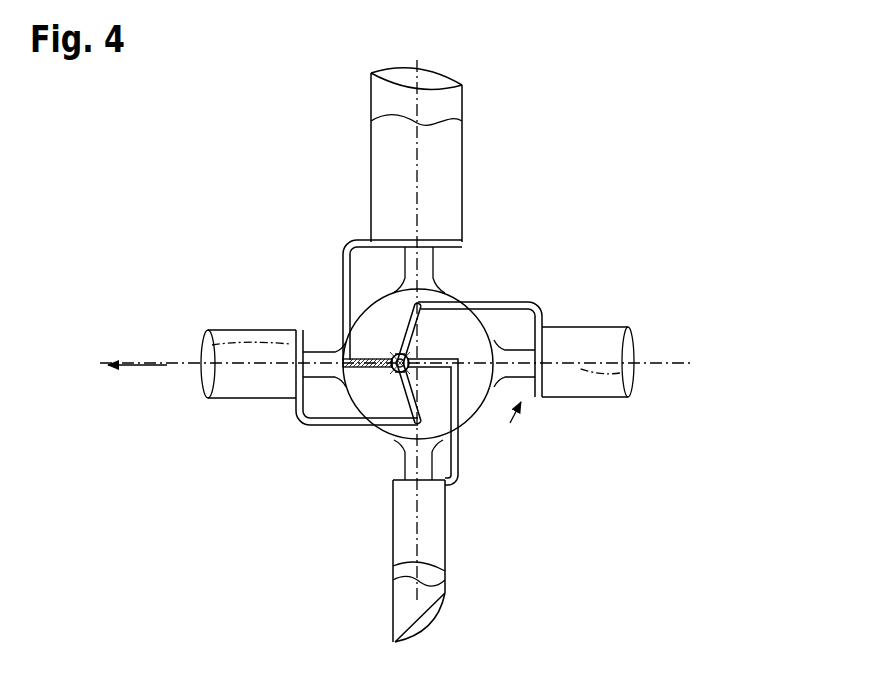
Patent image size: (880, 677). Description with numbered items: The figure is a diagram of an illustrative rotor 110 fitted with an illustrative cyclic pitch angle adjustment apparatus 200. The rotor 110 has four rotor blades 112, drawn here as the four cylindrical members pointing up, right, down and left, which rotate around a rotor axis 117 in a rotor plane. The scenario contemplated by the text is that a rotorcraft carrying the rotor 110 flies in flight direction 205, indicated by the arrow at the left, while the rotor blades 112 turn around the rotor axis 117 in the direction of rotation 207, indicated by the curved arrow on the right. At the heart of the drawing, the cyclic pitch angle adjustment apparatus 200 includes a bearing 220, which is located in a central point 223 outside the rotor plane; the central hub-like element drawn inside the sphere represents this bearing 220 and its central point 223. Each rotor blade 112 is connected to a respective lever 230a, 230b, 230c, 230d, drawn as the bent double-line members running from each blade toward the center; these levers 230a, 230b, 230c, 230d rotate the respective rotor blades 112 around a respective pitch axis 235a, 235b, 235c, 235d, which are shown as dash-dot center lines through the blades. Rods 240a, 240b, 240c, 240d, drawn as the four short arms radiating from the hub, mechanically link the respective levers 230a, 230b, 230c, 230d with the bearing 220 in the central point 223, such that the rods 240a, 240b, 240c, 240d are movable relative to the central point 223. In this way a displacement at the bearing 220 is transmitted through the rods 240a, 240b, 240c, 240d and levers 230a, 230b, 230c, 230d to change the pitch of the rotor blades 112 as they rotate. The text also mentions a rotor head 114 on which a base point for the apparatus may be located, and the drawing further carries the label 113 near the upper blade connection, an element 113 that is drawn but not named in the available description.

The rotor 110 is at (250, 155).
The rotor blade 112 is at (440, 178).
The upper neck channel 113 is at (452, 270).
The rotor head 114 is at (343, 272).
The rotor axis 117 is at (425, 350).
The cyclic pitch angle adjustment apparatus 200 is at (403, 351).
The flight direction 205 is at (145, 367).
The direction of rotation 207 is at (510, 423).
The bearing 220 is at (391, 356).
The central point 223 is at (381, 381).
The lever 230a is at (343, 289).
The lever 230b is at (463, 455).
The lever 230c is at (520, 300).
The lever 230d is at (300, 422).
The pitch axis 235a is at (435, 160).
The pitch axis 235b is at (393, 568).
The pitch axis 235c is at (625, 372).
The pitch axis 235d is at (202, 345).
The rod 240a is at (360, 358).
The rod 240b is at (435, 372).
The rod 240c is at (433, 346).
The rod 240d is at (405, 410).